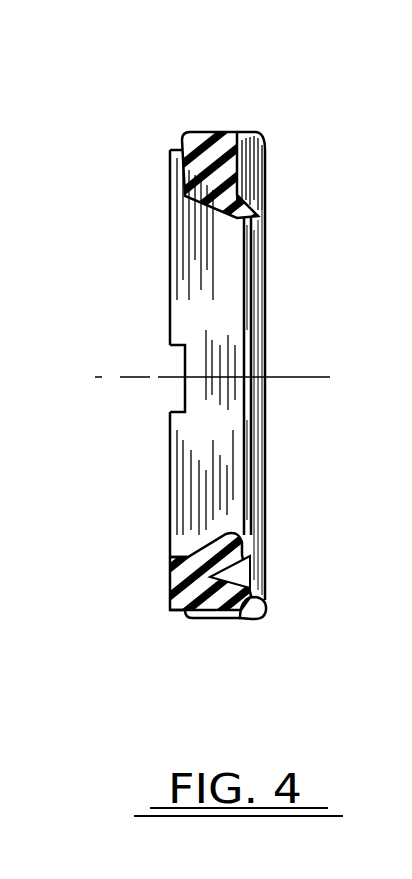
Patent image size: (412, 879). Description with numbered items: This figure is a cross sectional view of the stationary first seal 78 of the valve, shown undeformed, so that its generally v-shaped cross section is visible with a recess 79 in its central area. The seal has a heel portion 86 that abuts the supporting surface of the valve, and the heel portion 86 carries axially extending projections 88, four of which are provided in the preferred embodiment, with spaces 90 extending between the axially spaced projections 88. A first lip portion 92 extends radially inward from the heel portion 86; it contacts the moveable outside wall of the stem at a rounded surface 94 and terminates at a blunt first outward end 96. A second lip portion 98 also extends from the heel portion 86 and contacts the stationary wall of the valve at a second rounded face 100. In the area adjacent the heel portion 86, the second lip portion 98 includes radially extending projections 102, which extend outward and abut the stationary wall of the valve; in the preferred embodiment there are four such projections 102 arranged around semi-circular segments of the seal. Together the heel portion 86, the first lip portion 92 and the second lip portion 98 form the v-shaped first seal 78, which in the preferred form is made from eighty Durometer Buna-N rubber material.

The first seal 78 is at (254, 688).
The recess 79 is at (236, 575).
The heel portion 86 is at (194, 585).
The axially extending projections 88 is at (170, 298).
The spaces 90 is at (180, 366).
The first lip portion 92 is at (231, 133).
The rounded surface 94 is at (262, 216).
The blunt first outward end 96 is at (267, 200).
The second lip portion 98 is at (213, 602).
The second rounded face 100 is at (266, 617).
The radially extending projections 102 is at (185, 134).